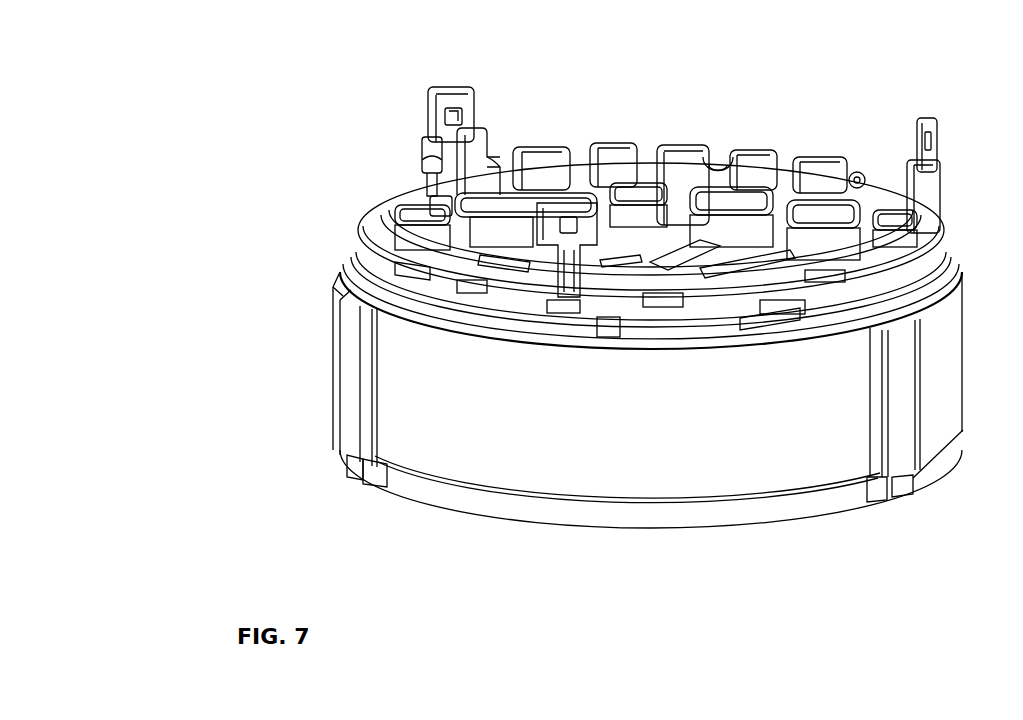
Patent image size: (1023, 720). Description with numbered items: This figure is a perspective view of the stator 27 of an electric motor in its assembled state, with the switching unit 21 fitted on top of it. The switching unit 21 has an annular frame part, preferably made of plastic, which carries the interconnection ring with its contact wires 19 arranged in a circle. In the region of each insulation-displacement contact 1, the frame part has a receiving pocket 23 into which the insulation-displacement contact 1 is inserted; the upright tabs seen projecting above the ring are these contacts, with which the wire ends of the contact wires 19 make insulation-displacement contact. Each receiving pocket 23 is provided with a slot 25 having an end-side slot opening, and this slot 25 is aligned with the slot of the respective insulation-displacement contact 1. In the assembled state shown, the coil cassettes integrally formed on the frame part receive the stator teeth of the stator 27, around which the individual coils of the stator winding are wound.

The insulation-displacement contact 1 is at (450, 87).
The contact wires 19 is at (432, 195).
The switching unit 21 is at (678, 150).
The receiving pocket 23 is at (487, 140).
The slot 25 is at (453, 158).
The stator 27 is at (760, 457).